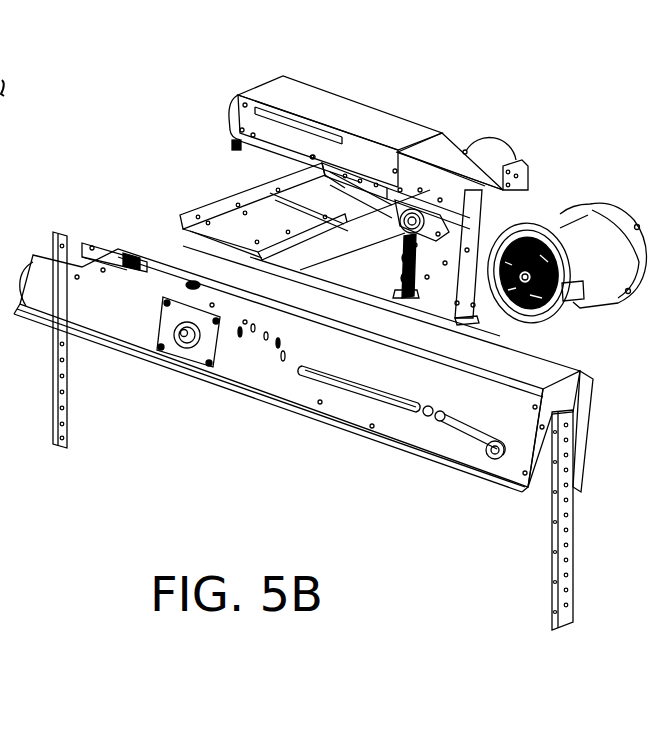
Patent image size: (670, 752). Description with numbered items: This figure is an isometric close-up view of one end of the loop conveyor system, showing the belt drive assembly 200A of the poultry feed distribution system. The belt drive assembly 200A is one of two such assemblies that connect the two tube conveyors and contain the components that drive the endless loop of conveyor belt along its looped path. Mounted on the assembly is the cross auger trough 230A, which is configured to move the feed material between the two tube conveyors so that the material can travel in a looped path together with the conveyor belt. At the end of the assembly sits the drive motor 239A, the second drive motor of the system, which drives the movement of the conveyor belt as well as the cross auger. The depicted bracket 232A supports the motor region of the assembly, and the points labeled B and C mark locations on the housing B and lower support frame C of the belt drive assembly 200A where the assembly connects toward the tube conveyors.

The lower frame / conveyor support beam C is at (134, 318).
The belt drive assembly 200A is at (441, 76).
The cross auger trough 230A is at (234, 228).
The upper housing B is at (338, 76).
The motor mount bracket 232A is at (498, 148).
The drive motor 239A is at (603, 229).